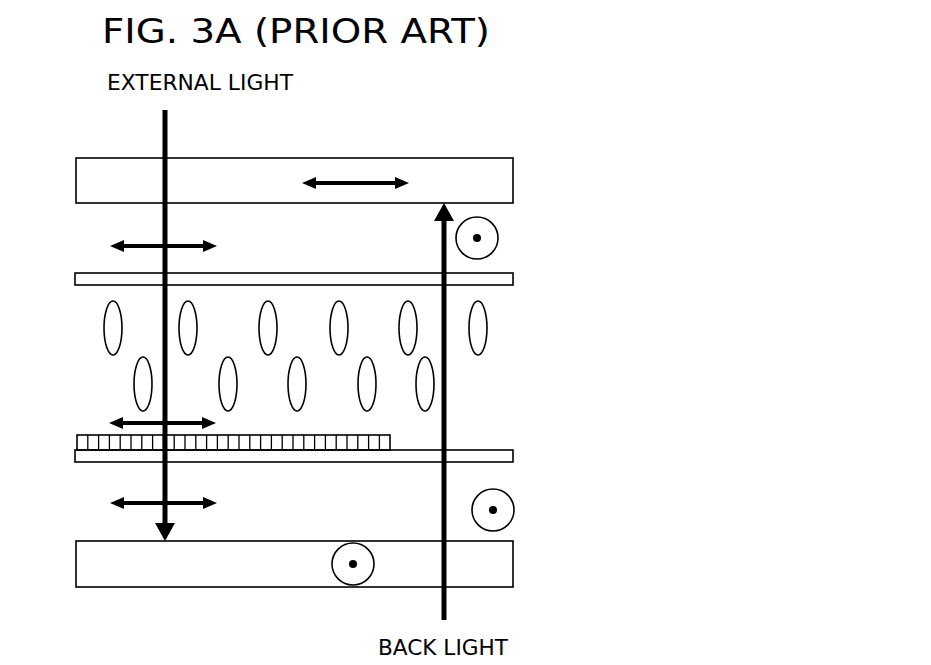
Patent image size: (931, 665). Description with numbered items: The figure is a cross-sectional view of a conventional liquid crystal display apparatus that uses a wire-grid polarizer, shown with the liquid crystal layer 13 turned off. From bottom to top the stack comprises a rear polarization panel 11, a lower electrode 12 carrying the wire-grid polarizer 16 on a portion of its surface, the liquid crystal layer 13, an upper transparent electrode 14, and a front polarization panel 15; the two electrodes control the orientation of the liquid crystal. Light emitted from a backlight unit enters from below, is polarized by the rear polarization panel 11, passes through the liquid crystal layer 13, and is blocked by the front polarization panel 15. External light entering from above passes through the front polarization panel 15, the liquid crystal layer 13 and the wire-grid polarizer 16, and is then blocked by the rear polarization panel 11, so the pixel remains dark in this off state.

The rear polarization panel 11 is at (513, 563).
The lower electrode 12 is at (513, 454).
The liquid crystal layer 13 is at (487, 328).
The transparent electrode 14 is at (513, 277).
The front polarization panel 15 is at (513, 180).
The wire-grid polarizer 16 is at (76, 444).